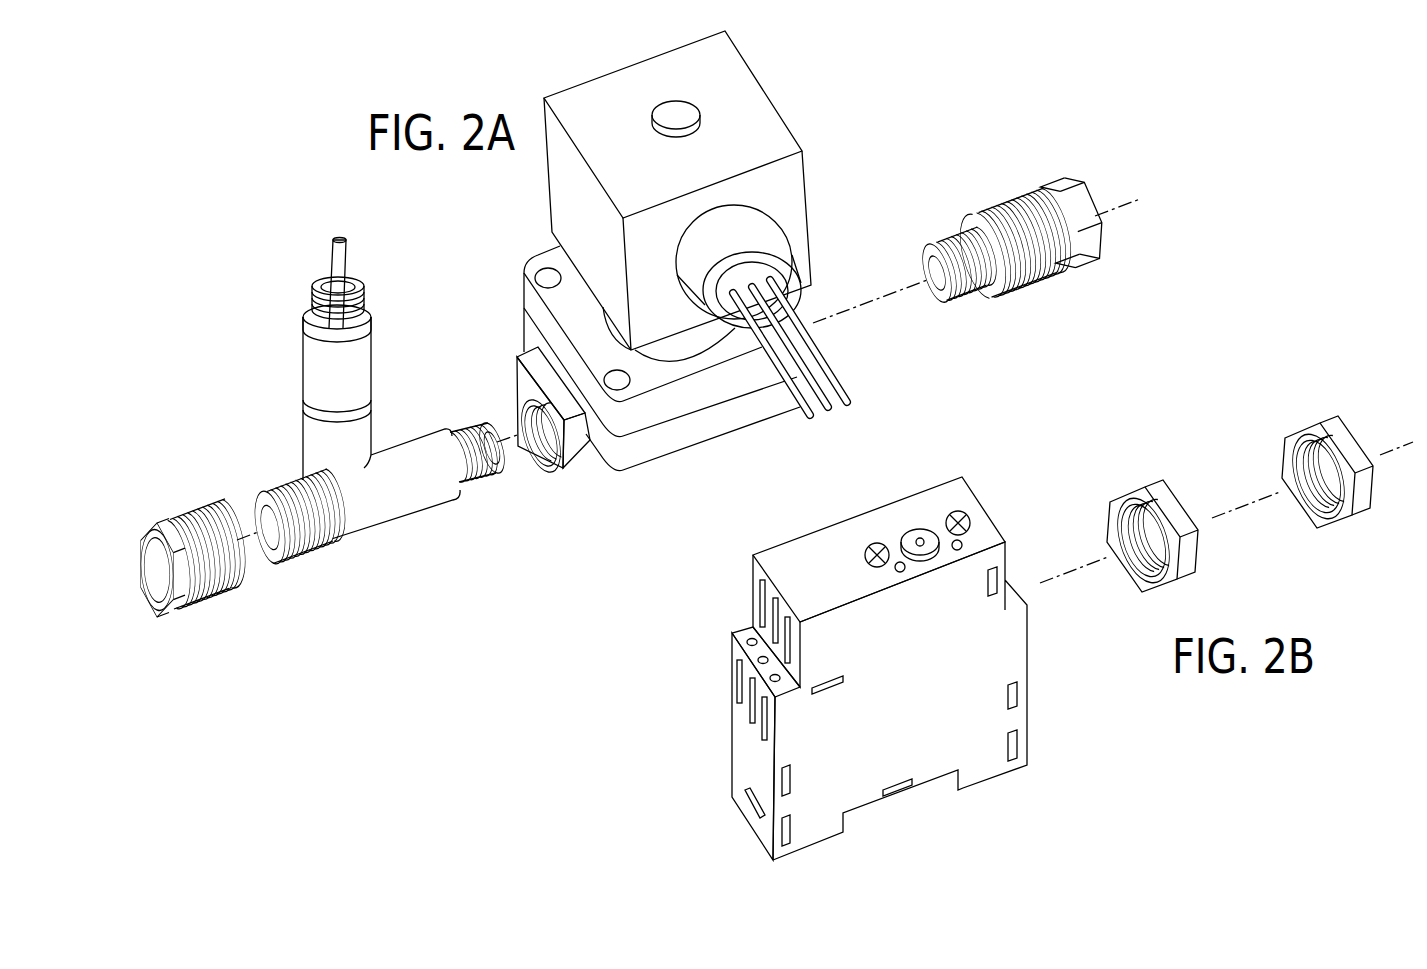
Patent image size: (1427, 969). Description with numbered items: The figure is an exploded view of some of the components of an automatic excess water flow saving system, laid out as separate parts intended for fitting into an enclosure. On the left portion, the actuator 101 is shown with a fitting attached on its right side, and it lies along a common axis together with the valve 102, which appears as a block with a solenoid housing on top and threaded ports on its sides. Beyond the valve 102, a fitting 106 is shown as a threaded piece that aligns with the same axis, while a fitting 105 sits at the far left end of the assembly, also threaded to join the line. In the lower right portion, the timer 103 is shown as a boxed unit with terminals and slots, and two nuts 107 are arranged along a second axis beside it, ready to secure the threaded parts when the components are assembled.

In FIG. 2A, the actuator 101 is at (405, 406).
In FIG. 2A, the valve 102 is at (689, 468).
In FIG. 2B, the timer 103 is at (1050, 716).
In FIG. 2A, the fitting 105 is at (184, 490).
In FIG. 2A, the fitting 106 is at (1012, 177).
In FIG. 2B, the nuts 107 is at (1157, 458).